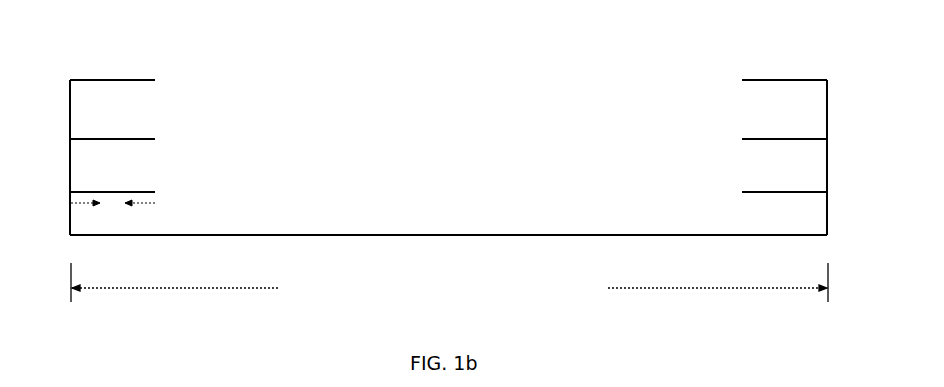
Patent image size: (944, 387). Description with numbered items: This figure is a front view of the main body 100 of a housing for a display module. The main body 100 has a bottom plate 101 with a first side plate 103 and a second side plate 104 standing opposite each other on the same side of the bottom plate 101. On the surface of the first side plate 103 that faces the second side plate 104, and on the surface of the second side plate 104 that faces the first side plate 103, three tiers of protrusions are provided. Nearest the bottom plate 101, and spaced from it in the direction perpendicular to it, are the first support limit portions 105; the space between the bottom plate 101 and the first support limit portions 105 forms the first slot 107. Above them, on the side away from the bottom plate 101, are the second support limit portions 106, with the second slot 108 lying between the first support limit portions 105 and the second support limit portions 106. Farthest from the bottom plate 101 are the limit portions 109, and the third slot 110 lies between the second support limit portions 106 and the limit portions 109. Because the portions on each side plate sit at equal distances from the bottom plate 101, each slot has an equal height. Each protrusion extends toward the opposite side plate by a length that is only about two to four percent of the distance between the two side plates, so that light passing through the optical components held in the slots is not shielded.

The main body 100 is at (705, 30).
The bottom plate 101 is at (632, 237).
The first side plate 103 is at (70, 160).
The second side plate 104 is at (829, 158).
The first support limit portions 105 is at (137, 191).
The second support limit portions 106 is at (137, 138).
The first slot 107 is at (448, 213).
The second slot 108 is at (448, 165).
The limit portions 109 is at (137, 79).
The third slot 110 is at (448, 109).